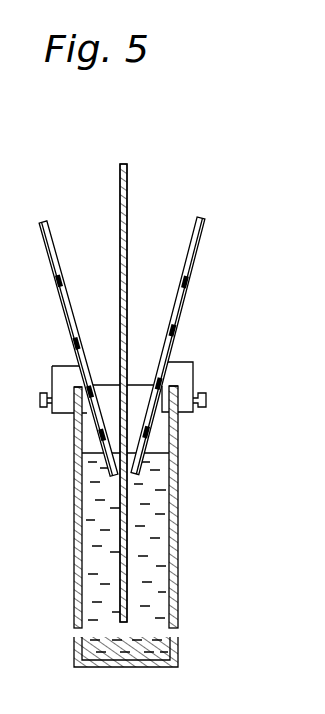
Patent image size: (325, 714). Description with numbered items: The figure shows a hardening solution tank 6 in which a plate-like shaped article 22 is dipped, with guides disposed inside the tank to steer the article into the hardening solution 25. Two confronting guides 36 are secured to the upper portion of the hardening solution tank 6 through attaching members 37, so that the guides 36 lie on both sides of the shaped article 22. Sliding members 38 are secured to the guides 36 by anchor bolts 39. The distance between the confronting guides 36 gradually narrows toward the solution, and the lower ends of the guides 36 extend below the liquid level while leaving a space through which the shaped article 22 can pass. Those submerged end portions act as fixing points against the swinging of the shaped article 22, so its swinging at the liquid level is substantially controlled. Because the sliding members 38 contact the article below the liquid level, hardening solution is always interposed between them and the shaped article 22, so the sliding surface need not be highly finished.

The hardening solution tank 6 is at (178, 568).
The liquid bath 25 is at (178, 483).
The attaching member 37 is at (193, 372).
The shaped article 22 is at (128, 182).
The anchor bolt 39 is at (55, 247).
The guide 36 is at (183, 307).
The sliding member 38 is at (191, 260).